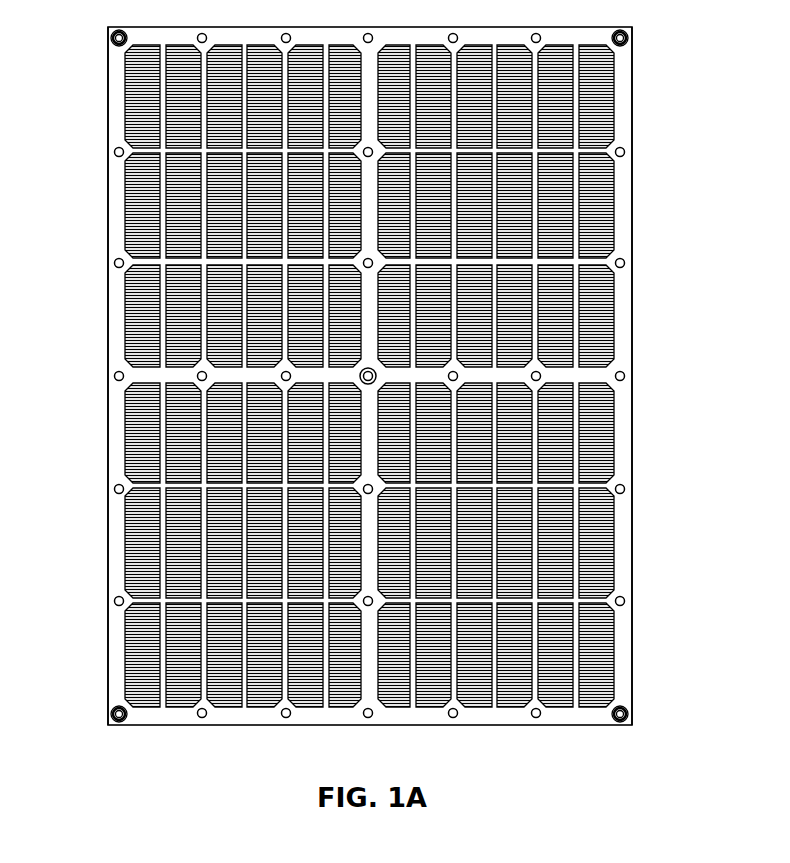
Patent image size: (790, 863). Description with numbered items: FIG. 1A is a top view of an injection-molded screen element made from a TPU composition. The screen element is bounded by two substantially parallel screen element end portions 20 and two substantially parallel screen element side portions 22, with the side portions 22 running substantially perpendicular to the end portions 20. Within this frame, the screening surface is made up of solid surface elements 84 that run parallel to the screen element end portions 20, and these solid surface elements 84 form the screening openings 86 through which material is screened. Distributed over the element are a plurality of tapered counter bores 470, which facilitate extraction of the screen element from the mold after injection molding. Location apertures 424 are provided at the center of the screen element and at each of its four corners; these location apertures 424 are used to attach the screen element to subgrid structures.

The screen element end portion 20 is at (207, 27).
The screen element side portion 22 is at (108, 203).
The solid surface element 84 is at (613, 172).
The screening opening 86 is at (608, 103).
The location aperture 424 is at (112, 41).
The tapered counter bore 470 is at (625, 265).